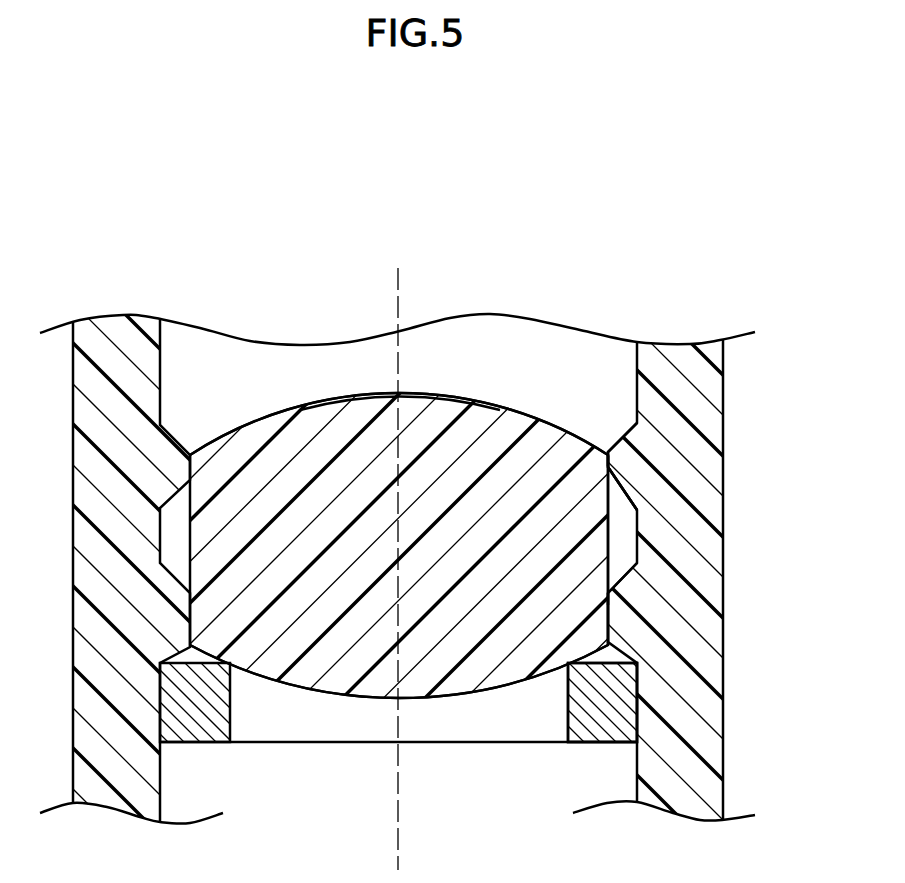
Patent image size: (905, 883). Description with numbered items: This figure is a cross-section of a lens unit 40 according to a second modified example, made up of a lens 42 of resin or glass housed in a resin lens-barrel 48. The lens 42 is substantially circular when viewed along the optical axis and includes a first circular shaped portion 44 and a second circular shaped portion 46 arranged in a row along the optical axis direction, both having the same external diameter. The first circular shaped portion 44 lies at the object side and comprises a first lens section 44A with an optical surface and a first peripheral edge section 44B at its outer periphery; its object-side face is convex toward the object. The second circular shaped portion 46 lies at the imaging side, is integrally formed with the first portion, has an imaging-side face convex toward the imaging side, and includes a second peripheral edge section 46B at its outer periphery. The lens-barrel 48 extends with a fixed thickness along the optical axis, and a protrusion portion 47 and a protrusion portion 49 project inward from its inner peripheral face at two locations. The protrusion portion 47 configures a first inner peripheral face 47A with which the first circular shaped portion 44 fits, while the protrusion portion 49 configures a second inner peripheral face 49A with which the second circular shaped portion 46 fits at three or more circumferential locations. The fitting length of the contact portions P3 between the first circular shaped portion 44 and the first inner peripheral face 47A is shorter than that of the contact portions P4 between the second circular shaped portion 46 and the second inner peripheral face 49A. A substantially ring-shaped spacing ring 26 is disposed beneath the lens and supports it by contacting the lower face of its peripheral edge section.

The lens unit 40 is at (610, 238).
The lens 42 is at (458, 361).
The first circular shaped portion 44 is at (490, 391).
The first lens section 44A is at (377, 392).
The first peripheral edge section 44B is at (593, 462).
The protrusion portion 47 is at (610, 430).
The lens-barrel 48 is at (734, 384).
The contact portions P3 is at (610, 465).
The first inner peripheral face 47A is at (607, 500).
The contact portions P4 is at (608, 610).
The second inner peripheral face 49A is at (610, 638).
The spacing ring 26 is at (268, 754).
The second peripheral edge section 46B is at (327, 692).
The second circular shaped portion 46 is at (465, 706).
The protrusion portion 49 is at (604, 657).